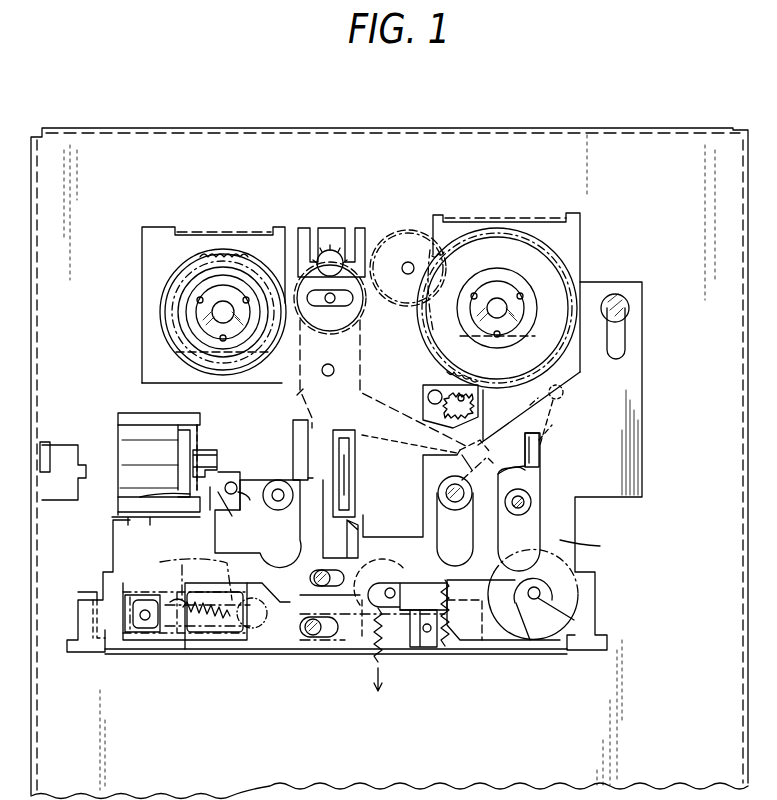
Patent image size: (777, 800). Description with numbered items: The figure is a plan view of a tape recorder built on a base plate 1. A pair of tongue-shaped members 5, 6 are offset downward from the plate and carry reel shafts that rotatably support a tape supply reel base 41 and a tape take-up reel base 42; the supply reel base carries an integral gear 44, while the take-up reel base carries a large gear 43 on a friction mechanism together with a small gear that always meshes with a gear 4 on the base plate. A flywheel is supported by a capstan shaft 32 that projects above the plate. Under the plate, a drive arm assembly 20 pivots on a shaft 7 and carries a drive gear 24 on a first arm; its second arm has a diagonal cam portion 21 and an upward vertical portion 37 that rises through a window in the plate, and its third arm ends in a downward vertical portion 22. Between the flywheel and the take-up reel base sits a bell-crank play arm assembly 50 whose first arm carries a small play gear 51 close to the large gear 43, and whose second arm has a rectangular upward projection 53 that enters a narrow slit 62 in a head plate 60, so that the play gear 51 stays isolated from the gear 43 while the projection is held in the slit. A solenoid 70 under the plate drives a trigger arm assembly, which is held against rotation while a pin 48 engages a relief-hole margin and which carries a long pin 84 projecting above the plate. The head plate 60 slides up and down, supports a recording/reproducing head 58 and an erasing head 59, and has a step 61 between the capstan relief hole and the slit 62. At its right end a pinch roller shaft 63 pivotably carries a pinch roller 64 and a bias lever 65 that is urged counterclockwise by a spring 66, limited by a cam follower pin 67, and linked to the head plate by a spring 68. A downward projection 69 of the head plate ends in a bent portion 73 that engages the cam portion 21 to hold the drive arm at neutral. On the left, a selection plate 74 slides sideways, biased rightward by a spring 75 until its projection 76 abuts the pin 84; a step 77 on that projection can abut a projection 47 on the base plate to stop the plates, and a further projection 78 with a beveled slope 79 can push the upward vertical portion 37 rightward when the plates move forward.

The base plate 1 is at (643, 137).
The gear 4 is at (401, 233).
The tongue-shaped member 5 is at (178, 245).
The tongue-shaped member 6 is at (558, 240).
The shaft 7 is at (334, 370).
The drive arm assembly 20 is at (300, 396).
The cam portion 21 is at (298, 472).
The downward vertical portion 22 is at (428, 463).
The drive gear 24 is at (356, 316).
The capstan shaft 32 is at (522, 503).
The upward vertical portion 37 is at (347, 490).
The tape supply reel base 41 is at (222, 300).
The tape take-up reel base 42 is at (499, 296).
The large gear 43 is at (510, 235).
The gear 44 is at (243, 252).
The projection 47 is at (199, 462).
The pin 48 is at (235, 494).
The play arm assembly 50 is at (565, 403).
The play gear 51 is at (445, 384).
The upward projection 53 is at (533, 457).
The recording/reproducing head 58 is at (377, 560).
The erasing head 59 is at (183, 578).
The head plate 60 is at (600, 546).
The step 61 is at (526, 482).
The narrow slit 62 is at (542, 449).
The pinch roller shaft 63 is at (576, 620).
The pinch roller 64 is at (582, 592).
The bias lever 65 is at (500, 630).
The spring 66 is at (372, 660).
The cam follower pin 67 is at (395, 590).
The spring 68 is at (448, 645).
The downward projection 69 is at (303, 515).
The solenoid 70 is at (138, 453).
The bent portion 73 is at (300, 479).
The selection plate 74 is at (274, 590).
The spring 75 is at (210, 620).
The projection 76 is at (222, 502).
The step 77 is at (190, 495).
The projection 78 is at (348, 538).
The slope 79 is at (372, 520).
The pin 84 is at (233, 472).